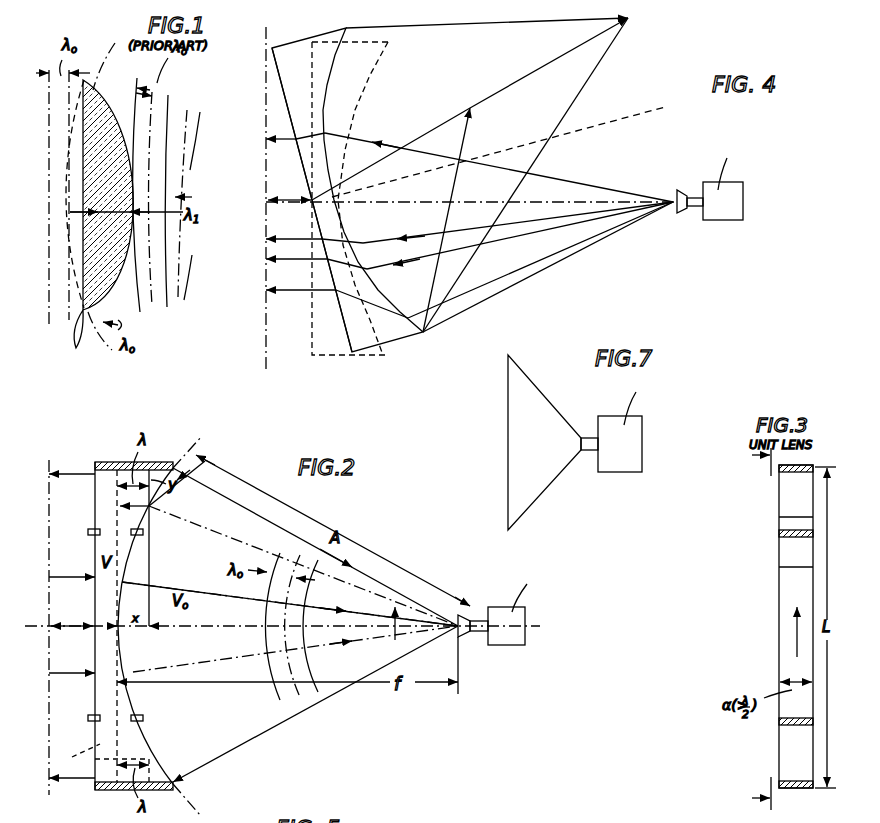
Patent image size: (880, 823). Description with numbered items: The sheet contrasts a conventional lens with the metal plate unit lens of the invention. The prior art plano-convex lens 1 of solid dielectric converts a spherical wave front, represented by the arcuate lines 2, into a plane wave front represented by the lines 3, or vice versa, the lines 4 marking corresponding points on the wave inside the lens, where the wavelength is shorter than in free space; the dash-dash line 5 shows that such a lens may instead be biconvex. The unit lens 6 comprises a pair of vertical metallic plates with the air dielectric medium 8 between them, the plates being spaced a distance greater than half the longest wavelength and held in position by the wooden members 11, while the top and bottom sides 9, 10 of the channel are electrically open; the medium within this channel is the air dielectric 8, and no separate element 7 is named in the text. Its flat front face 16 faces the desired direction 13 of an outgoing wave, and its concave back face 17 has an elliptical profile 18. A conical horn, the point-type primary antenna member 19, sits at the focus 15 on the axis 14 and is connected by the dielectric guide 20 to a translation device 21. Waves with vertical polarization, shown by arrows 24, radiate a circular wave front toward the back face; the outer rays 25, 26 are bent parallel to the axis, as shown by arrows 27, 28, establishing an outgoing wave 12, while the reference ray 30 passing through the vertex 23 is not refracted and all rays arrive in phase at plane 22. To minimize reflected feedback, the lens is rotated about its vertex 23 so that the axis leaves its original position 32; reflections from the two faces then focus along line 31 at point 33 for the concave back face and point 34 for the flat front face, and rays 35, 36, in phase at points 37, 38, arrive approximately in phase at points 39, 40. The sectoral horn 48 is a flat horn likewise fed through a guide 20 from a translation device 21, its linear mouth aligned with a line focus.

In FIG. 1, the plano-convex prior art lens 1 is at (120, 54).
In FIG. 1, the arcuate lines of the spherical wave front 2 is at (182, 278).
In FIG. 4, the arcuate lines of the spherical wave front 2 is at (386, 318).
In FIG. 2, the arcuate lines of the spherical wave front 2 is at (302, 708).
In FIG. 3, the arcuate lines of the spherical wave front 2 is at (754, 628).
In FIG. 1, the lines of the plane wave front 3 is at (68, 173).
In FIG. 4, the lines of the plane wave front 3 is at (264, 362).
In FIG. 2, the lines of the plane wave front 3 is at (48, 728).
In FIG. 1, the lines of the wave passing through the lens 4 is at (122, 157).
In FIG. 2, the lines of the wave passing through the lens 4 is at (103, 763).
In FIG. 1, the dash-dash line 5 is at (79, 337).
In FIG. 4, the unit lens 6 is at (318, 357).
In FIG. 2, the unit lens 6 is at (168, 460).
In FIG. 3, the unit lens 6 is at (790, 519).
In FIG. 4, the lens body 7 is at (366, 345).
In FIG. 2, the lens body 7 is at (133, 742).
In FIG. 3, the lens body 7 is at (790, 567).
In FIG. 3, the air dielectric medium 8 is at (790, 590).
In FIG. 2, the top side 9 is at (94, 470).
In FIG. 3, the top side 9 is at (798, 478).
In FIG. 2, the bottom side 10 is at (94, 782).
In FIG. 3, the bottom side 10 is at (800, 776).
In FIG. 2, the wooden members 11 is at (108, 462).
In FIG. 3, the wooden members 11 is at (793, 466).
In FIG. 4, the outgoing wave 12 is at (280, 197).
In FIG. 2, the outgoing wave 12 is at (60, 624).
In FIG. 4, the direction of an outgoing wave 13 is at (300, 197).
In FIG. 2, the direction of an outgoing wave 13 is at (80, 624).
In FIG. 4, the axis 14 is at (647, 108).
In FIG. 2, the axis 14 is at (32, 624).
In FIG. 2, the focus 15 is at (450, 640).
In FIG. 4, the front face 16 is at (345, 335).
In FIG. 2, the front face 16 is at (94, 556).
In FIG. 4, the back face 17 is at (438, 300).
In FIG. 2, the back face 17 is at (170, 775).
In FIG. 2, the profile or curvature 18 is at (192, 452).
In FIG. 4, the point-type primary antenna member 19 is at (680, 210).
In FIG. 2, the point-type primary antenna member 19 is at (467, 612).
In FIG. 4, the dielectric guide 20 is at (696, 208).
In FIG. 7, the dielectric guide 20 is at (591, 452).
In FIG. 2, the dielectric guide 20 is at (477, 633).
In FIG. 4, the translation device 21 is at (718, 220).
In FIG. 7, the translation device 21 is at (618, 472).
In FIG. 2, the translation device 21 is at (511, 646).
In FIG. 2, the plane 22 is at (117, 512).
In FIG. 2, the vertex 23 is at (118, 629).
In FIG. 2, the arrows representing vertical electric polarization 24 is at (398, 608).
In FIG. 3, the arrows representing vertical electric polarization 24 is at (790, 634).
In FIG. 4, the outer ray 25 is at (553, 178).
In FIG. 2, the outer ray 25 is at (297, 538).
In FIG. 4, the outer ray 26 is at (604, 234).
In FIG. 2, the outer ray 26 is at (257, 733).
In FIG. 4, the arrow 27 is at (268, 137).
In FIG. 2, the arrow 27 is at (68, 474).
In FIG. 4, the arrow 28 is at (290, 292).
In FIG. 2, the arrow 28 is at (66, 778).
In FIG. 2, the reference ray 30 is at (207, 626).
In FIG. 4, the line 31 is at (560, 58).
In FIG. 4, the original position of the lens axis 32 is at (618, 200).
In FIG. 4, the point 33 is at (470, 106).
In FIG. 4, the point 34 is at (630, 22).
In FIG. 4, the ray 35 is at (532, 224).
In FIG. 4, the ray 36 is at (572, 228).
In FIG. 4, the point 37 is at (363, 243).
In FIG. 4, the point 38 is at (367, 269).
In FIG. 4, the point 39 is at (266, 238).
In FIG. 4, the point 40 is at (266, 261).
In FIG. 7, the sectoral horn 48 is at (550, 483).